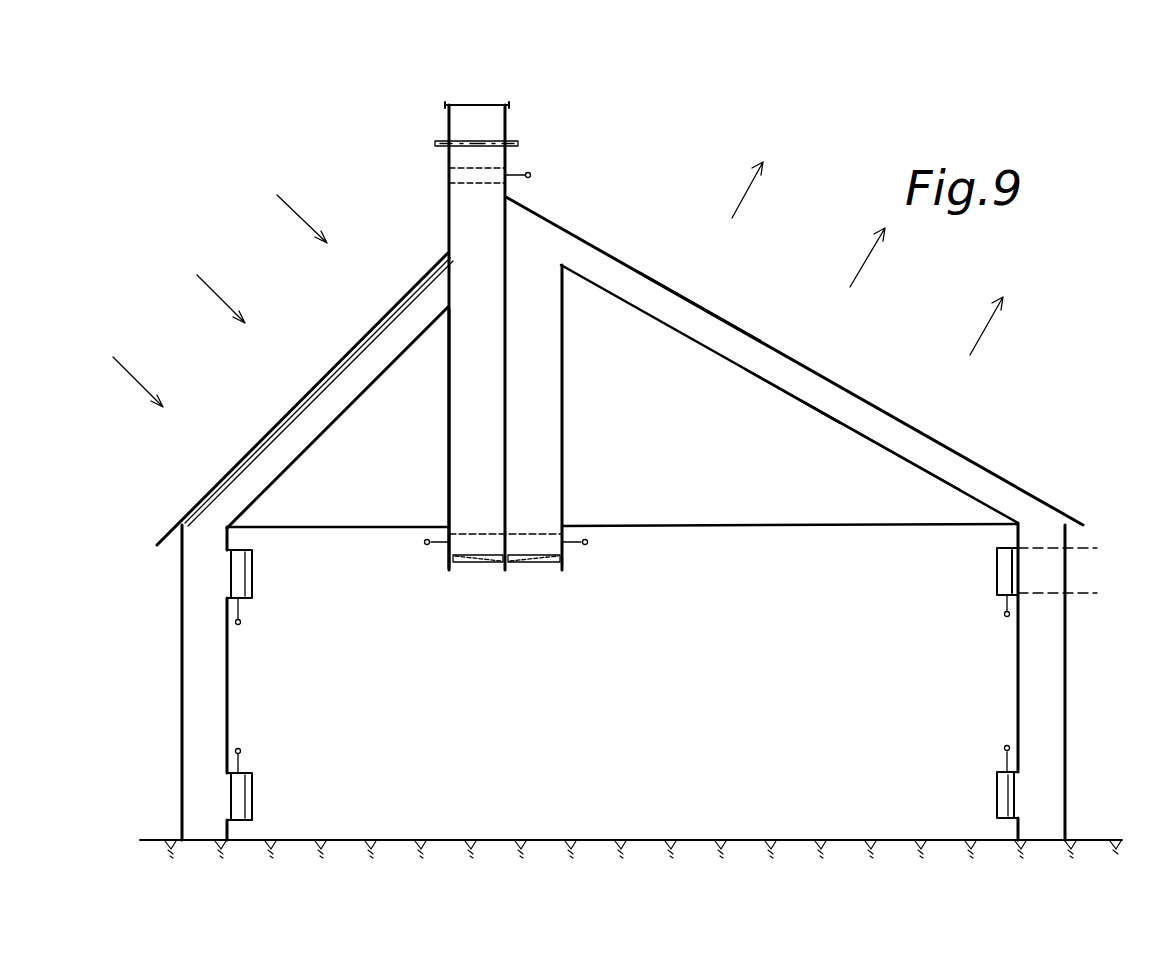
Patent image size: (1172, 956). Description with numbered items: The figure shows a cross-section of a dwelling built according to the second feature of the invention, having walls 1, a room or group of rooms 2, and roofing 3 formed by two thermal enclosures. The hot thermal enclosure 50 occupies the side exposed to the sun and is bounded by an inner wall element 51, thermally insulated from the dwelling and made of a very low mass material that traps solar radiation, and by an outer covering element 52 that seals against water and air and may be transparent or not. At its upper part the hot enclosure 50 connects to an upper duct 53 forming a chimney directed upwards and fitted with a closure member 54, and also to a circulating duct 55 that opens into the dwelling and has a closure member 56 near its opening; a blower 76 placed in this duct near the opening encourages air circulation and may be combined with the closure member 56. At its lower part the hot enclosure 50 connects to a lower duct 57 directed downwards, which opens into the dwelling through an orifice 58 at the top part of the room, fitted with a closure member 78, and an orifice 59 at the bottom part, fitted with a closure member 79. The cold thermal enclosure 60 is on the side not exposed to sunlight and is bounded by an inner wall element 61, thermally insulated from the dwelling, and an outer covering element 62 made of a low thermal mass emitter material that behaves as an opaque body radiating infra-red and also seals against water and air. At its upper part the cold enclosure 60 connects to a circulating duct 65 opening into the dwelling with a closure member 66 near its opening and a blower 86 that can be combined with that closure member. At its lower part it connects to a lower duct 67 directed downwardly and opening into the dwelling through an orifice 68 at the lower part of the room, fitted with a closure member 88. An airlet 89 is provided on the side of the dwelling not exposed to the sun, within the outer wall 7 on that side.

The walls 1 is at (182, 706).
The room 2 is at (616, 722).
The roofing 3 is at (614, 239).
The right exterior wall 7 is at (1065, 685).
The hot thermal enclosure 50 is at (372, 357).
The inner wall element 51 is at (323, 434).
The outer covering element 52 is at (290, 417).
The upper duct 53 is at (506, 132).
The closure member 54 is at (457, 177).
The circulating duct 55 is at (452, 465).
The closure member 56 is at (455, 554).
The lower duct 57 is at (208, 667).
The orifice 58 is at (253, 590).
The orifice 59 is at (253, 810).
The cold thermal enclosure 60 is at (768, 362).
The inner wall element 61 is at (830, 402).
The outer covering element 62 is at (683, 294).
The circulating duct 65 is at (542, 426).
The closure member 66 is at (561, 554).
The lower duct 67 is at (1032, 631).
The orifice 68 is at (998, 782).
The blower 76 is at (456, 563).
The closure member 78 is at (242, 562).
The closure member 79 is at (247, 787).
The blower 86 is at (551, 563).
The closure member 88 is at (1007, 803).
The airlet 89 is at (1003, 572).